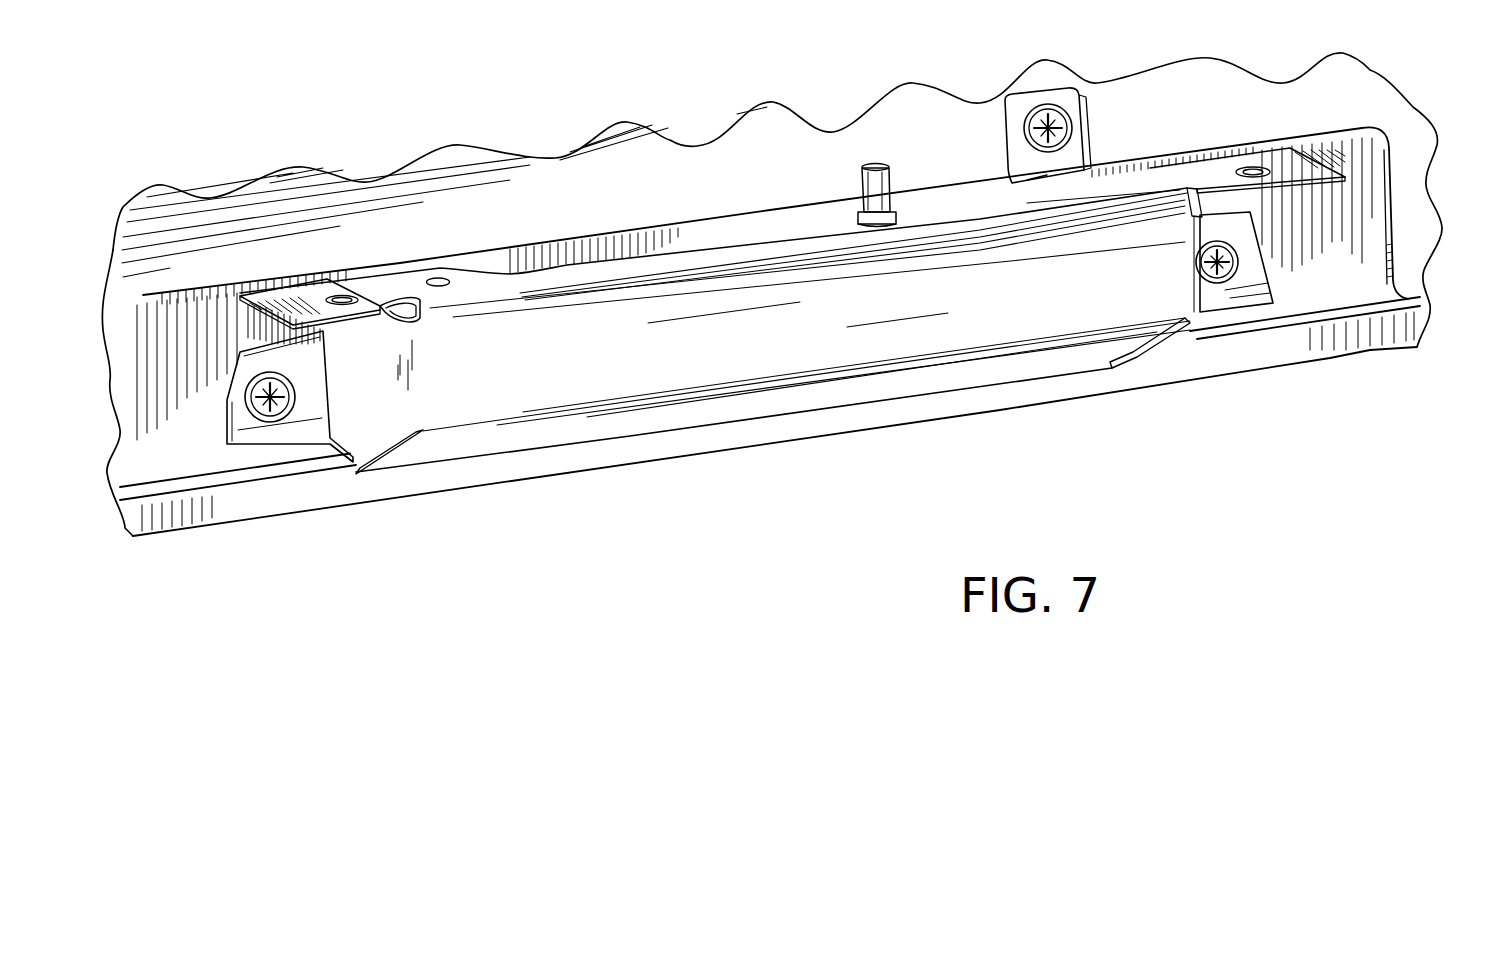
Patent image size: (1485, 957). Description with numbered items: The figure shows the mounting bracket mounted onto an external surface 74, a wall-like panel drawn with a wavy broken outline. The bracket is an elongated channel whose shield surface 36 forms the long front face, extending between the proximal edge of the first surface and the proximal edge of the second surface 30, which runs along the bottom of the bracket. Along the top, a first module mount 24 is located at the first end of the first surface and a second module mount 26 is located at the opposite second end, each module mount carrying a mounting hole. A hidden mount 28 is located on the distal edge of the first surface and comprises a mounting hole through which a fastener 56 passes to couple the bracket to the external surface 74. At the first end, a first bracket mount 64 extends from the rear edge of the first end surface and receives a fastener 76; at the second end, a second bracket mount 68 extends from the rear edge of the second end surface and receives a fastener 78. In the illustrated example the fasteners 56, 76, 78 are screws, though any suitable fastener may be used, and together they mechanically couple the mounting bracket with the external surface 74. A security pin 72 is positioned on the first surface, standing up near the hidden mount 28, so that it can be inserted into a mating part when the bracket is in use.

The first module mount 24 is at (285, 293).
The second module mount 26 is at (1282, 160).
The hidden mount 28 is at (1030, 97).
The second surface 30 is at (426, 470).
The shield surface 36 is at (698, 370).
The fastener 56 is at (1082, 155).
The first bracket mount 64 is at (293, 442).
The second bracket mount 68 is at (1257, 312).
The security pin 72 is at (872, 164).
The external surface 74 is at (1397, 196).
The fastener 76 is at (272, 422).
The fastener 78 is at (1225, 283).